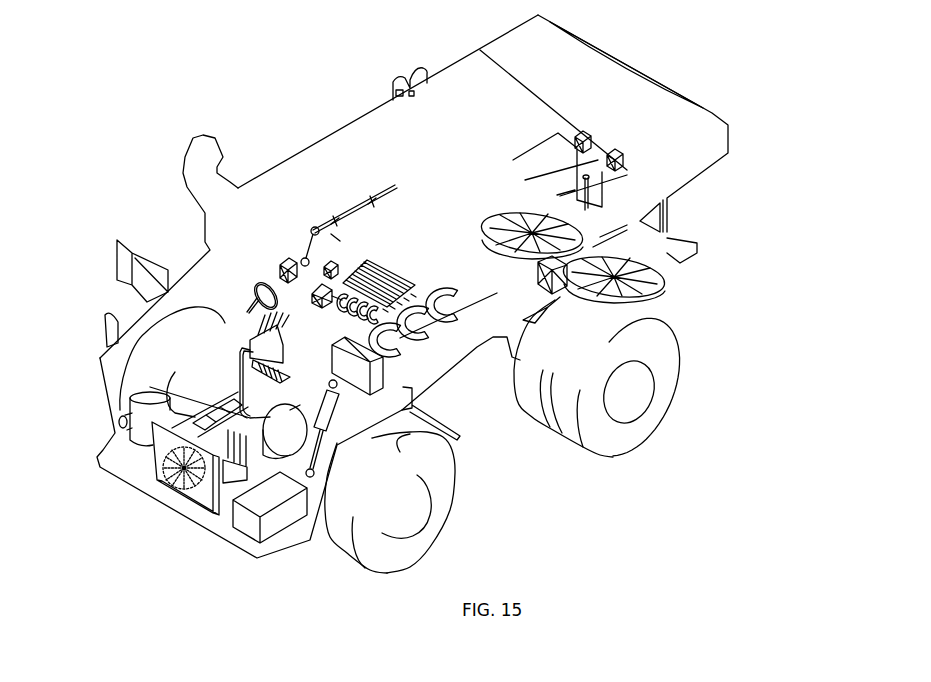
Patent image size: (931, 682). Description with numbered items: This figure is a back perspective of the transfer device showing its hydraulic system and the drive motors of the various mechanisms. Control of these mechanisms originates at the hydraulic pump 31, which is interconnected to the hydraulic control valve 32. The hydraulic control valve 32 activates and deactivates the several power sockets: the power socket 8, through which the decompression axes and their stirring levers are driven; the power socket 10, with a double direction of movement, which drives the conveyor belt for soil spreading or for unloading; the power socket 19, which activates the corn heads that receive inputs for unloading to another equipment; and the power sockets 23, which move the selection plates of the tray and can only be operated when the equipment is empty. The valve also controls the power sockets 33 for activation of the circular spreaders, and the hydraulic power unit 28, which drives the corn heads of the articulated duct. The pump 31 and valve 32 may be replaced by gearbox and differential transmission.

The power sockets 23 is at (588, 142).
The power socket 10 is at (303, 258).
The power socket 8 is at (281, 262).
The hydraulic control valve 32 is at (250, 343).
The hydraulic pump 31 is at (240, 413).
The power sockets 33 is at (557, 273).
The power socket 19 is at (297, 280).
The hydraulic power unit 28 is at (365, 378).